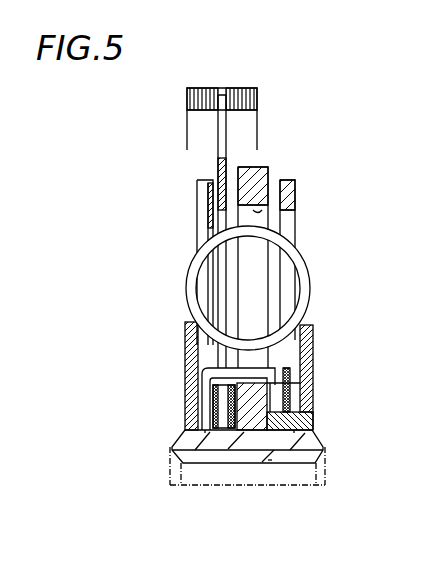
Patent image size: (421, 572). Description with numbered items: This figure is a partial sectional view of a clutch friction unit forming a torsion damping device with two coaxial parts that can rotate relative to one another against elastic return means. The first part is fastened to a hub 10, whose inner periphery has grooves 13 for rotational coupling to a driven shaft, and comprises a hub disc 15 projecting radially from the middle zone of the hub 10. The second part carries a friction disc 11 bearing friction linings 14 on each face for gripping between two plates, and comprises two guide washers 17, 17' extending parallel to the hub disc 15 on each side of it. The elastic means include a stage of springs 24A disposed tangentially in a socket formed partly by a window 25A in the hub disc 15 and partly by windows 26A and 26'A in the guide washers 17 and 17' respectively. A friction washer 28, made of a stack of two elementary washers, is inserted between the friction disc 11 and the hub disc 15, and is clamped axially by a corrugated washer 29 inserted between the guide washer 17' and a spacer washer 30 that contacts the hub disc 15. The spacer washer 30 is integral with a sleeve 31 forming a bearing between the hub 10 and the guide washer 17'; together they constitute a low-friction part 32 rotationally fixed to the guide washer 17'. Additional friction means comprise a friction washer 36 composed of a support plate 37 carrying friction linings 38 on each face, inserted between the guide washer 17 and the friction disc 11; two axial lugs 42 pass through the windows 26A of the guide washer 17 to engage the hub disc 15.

The hub 10 is at (323, 437).
The friction disc 11 is at (216, 158).
The grooves 13 is at (270, 462).
The friction linings 14 is at (198, 98).
The hub disc 15 is at (268, 168).
The guide washer 17 is at (181, 259).
The guide washer 17' is at (308, 254).
The springs 24A is at (306, 270).
The window 25A is at (255, 210).
The window 26A is at (206, 224).
The window 26'A is at (332, 359).
The friction washer 28 is at (230, 435).
The corrugated washer 29 is at (292, 383).
The spacer washer 30 is at (300, 392).
The sleeve 31 is at (313, 418).
The part 32 is at (296, 433).
The friction washer 36 is at (202, 372).
The support plate 37 is at (205, 433).
The friction linings 38 is at (212, 395).
The axial lugs 42 is at (290, 368).